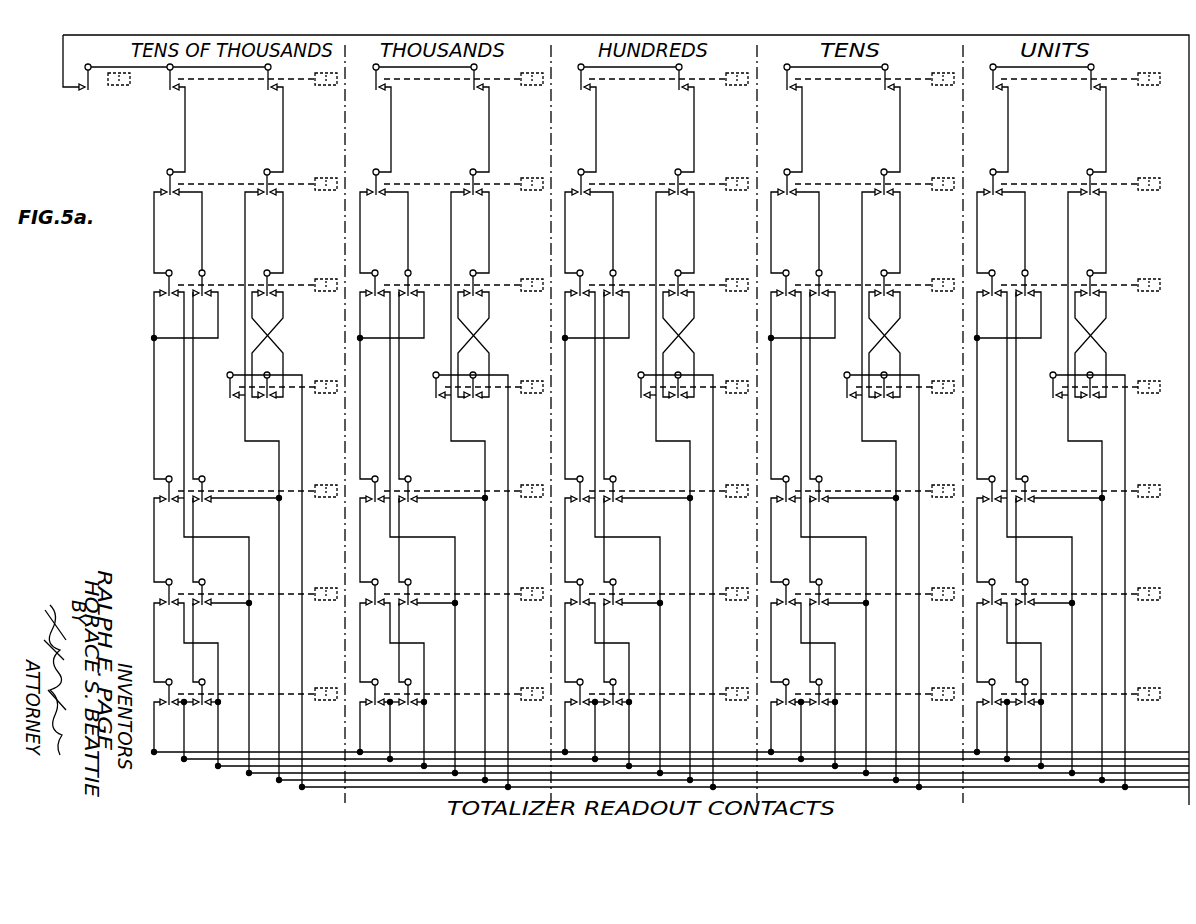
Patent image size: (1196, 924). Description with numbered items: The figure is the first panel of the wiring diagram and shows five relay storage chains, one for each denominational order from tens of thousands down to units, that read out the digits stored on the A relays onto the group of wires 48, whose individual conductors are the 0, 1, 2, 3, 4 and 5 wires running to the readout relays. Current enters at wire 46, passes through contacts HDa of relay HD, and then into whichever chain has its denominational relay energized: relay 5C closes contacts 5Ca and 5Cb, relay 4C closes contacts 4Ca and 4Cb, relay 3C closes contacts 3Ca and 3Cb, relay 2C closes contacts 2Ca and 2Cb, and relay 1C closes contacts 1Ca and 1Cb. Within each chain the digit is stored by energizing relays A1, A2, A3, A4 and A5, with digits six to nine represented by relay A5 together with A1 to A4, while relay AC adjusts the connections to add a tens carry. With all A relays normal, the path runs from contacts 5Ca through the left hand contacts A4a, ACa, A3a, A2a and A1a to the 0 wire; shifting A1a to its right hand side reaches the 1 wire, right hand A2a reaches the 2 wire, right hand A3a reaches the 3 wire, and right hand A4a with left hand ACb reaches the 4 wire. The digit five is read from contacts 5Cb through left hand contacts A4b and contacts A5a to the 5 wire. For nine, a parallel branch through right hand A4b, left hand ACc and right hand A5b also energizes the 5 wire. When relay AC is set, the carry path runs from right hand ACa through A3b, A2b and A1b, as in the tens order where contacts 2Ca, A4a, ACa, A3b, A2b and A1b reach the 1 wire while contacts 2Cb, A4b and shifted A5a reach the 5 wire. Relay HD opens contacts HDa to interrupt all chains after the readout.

The wire 46 is at (965, 35).
The group of wires 48 is at (670, 785).
The contacts HDa is at (84, 80).
The relay HD is at (116, 87).
The contacts 5Ca is at (172, 90).
The contacts 5Cb is at (270, 90).
The relay 5C is at (323, 88).
The contacts 4Ca is at (378, 90).
The contacts 4Cb is at (476, 90).
The relay 4C is at (529, 88).
The contacts 3Ca is at (583, 90).
The contacts 3Cb is at (681, 90).
The relay 3C is at (734, 88).
The contacts 2Ca is at (789, 90).
The contacts 2Cb is at (887, 90).
The relay 2C is at (940, 88).
The contacts 1Ca is at (995, 90).
The contacts 1Cb is at (1093, 90).
The relay 1C is at (1146, 88).
The contacts A4a is at (173, 191).
The contacts A4b is at (265, 190).
The relay A4 is at (318, 193).
The contacts ACa is at (173, 290).
The contacts ACb is at (205, 290).
The contacts ACc is at (268, 290).
The relay AC is at (318, 293).
The contacts A5a is at (233, 399).
The contacts A5b is at (270, 399).
The relay A5 is at (320, 397).
The contacts A3a is at (170, 496).
The contacts A3b is at (205, 497).
The relay A3 is at (320, 500).
The contacts A2a is at (172, 600).
The contacts A2b is at (205, 600).
The relay A2 is at (320, 603).
The contacts A1a is at (173, 697).
The contacts A1b is at (205, 697).
The relay A1 is at (320, 702).
The 0 wire 0 is at (170, 758).
The 1 wire 1 is at (201, 765).
The 2 wire 2 is at (236, 772).
The 3 wire 3 is at (266, 778).
The 4 wire 4 is at (291, 784).
The 5 wire 5 is at (322, 790).